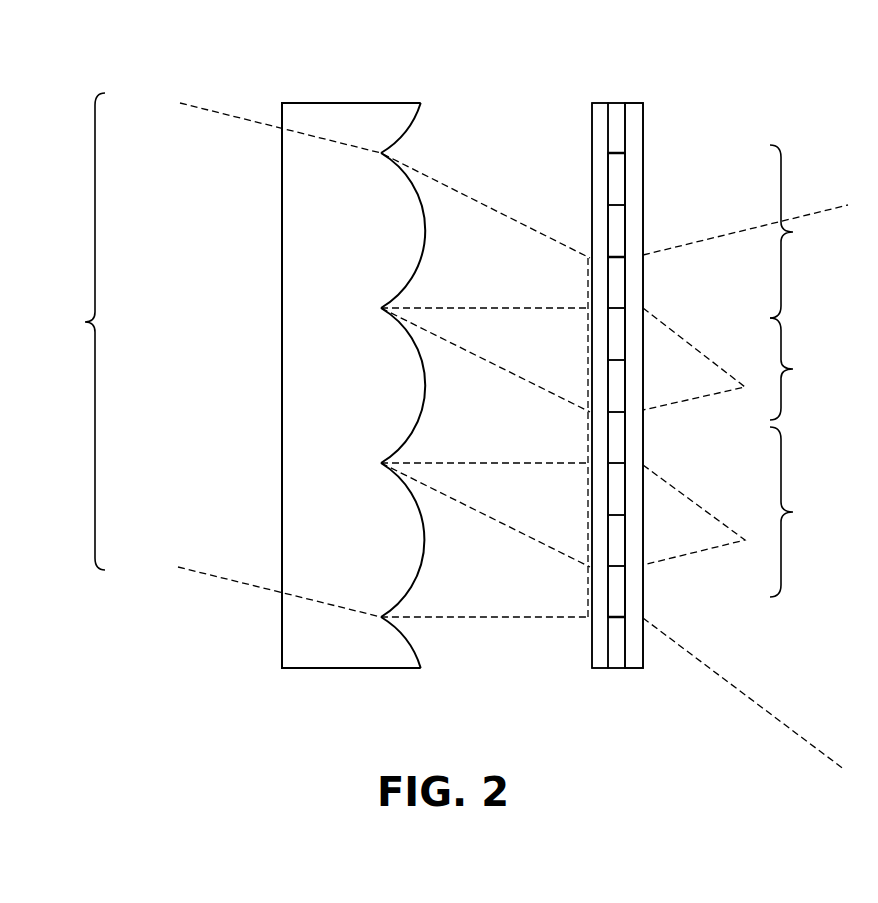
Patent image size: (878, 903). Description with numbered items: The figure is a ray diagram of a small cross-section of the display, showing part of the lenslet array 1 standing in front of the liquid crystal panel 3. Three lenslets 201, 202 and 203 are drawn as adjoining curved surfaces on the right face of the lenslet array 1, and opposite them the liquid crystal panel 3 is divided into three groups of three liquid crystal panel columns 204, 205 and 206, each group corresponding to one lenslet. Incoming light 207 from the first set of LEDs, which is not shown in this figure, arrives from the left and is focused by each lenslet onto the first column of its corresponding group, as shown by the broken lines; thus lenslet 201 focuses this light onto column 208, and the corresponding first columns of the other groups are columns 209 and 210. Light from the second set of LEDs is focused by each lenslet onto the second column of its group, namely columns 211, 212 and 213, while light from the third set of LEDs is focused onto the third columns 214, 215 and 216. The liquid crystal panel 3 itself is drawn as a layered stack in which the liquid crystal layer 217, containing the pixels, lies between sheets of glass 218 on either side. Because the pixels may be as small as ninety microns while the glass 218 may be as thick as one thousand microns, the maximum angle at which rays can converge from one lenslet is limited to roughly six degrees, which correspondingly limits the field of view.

The lenslet array 1 is at (388, 103).
The liquid crystal panel 3 is at (643, 128).
The lenslet 201 is at (372, 228).
The lenslet 202 is at (372, 385).
The lenslet 203 is at (372, 505).
The group of liquid crystal panel columns 204 is at (804, 231).
The group of liquid crystal panel columns 205 is at (804, 369).
The group of liquid crystal panel columns 206 is at (804, 512).
The incoming light 207 is at (75, 331).
The column 208 is at (640, 293).
The column 209 is at (640, 450).
The column 210 is at (640, 603).
The column 211 is at (640, 230).
The column 212 is at (640, 388).
The column 213 is at (640, 555).
The third column 214 is at (640, 178).
The third column 215 is at (640, 343).
The third column 216 is at (640, 500).
The liquid crystal layer 217 is at (613, 668).
The glass 218 is at (598, 668).